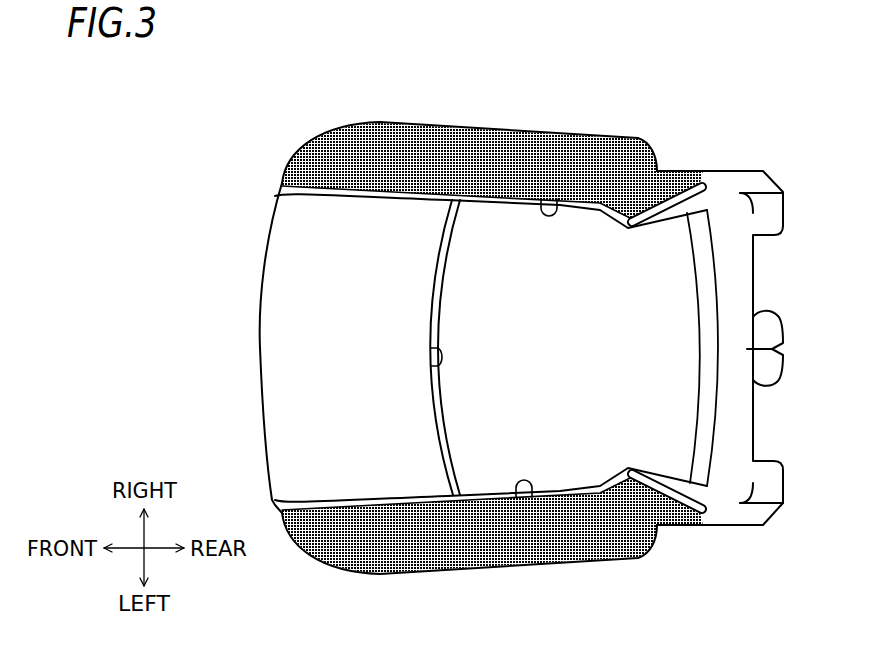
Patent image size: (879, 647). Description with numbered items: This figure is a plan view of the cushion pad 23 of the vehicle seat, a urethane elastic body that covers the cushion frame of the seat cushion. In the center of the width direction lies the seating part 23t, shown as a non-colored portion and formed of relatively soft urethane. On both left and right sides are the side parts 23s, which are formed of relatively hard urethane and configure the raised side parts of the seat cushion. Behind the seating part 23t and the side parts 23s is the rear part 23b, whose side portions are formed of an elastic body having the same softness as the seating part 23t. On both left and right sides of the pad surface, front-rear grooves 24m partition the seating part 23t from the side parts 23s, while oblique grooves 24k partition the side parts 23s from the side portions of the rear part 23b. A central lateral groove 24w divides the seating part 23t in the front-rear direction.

The cushion pad 23 is at (606, 135).
The side parts 23s is at (345, 150).
The seating part 23t is at (310, 288).
The rear part 23b is at (703, 268).
The front-rear grooves 24m is at (559, 199).
The oblique grooves 24k is at (672, 208).
The central lateral groove 24w is at (430, 365).